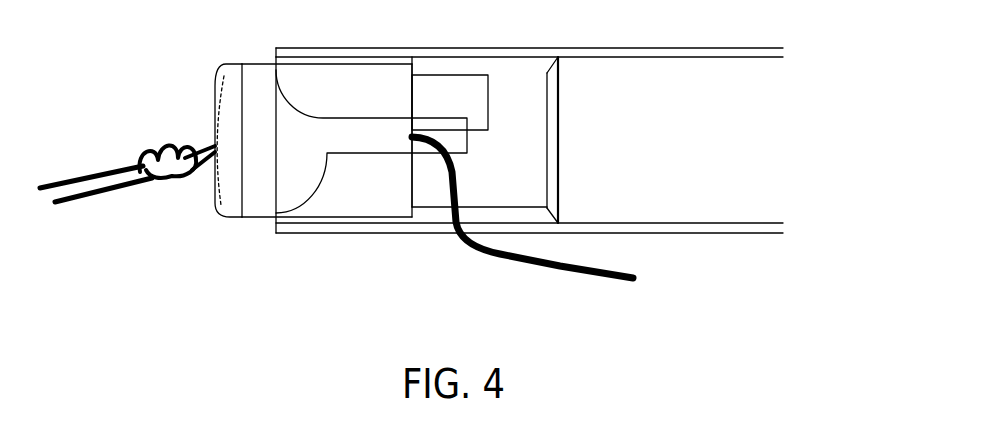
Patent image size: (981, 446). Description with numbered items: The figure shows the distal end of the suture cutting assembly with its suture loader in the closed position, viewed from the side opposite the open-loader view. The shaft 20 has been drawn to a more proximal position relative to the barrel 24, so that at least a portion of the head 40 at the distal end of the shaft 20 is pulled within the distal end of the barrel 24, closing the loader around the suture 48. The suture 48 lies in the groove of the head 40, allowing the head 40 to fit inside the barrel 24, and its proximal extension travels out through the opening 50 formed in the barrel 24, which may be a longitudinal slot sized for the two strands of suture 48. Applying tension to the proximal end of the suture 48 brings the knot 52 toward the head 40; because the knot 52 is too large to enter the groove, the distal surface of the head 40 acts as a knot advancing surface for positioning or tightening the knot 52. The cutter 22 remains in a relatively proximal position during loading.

The shaft 20 is at (528, 140).
The cutter 22 is at (652, 140).
The barrel 24 is at (495, 47).
The head 40 is at (260, 217).
The suture 48 is at (470, 252).
The opening 50 is at (378, 115).
The knot 52 is at (153, 153).